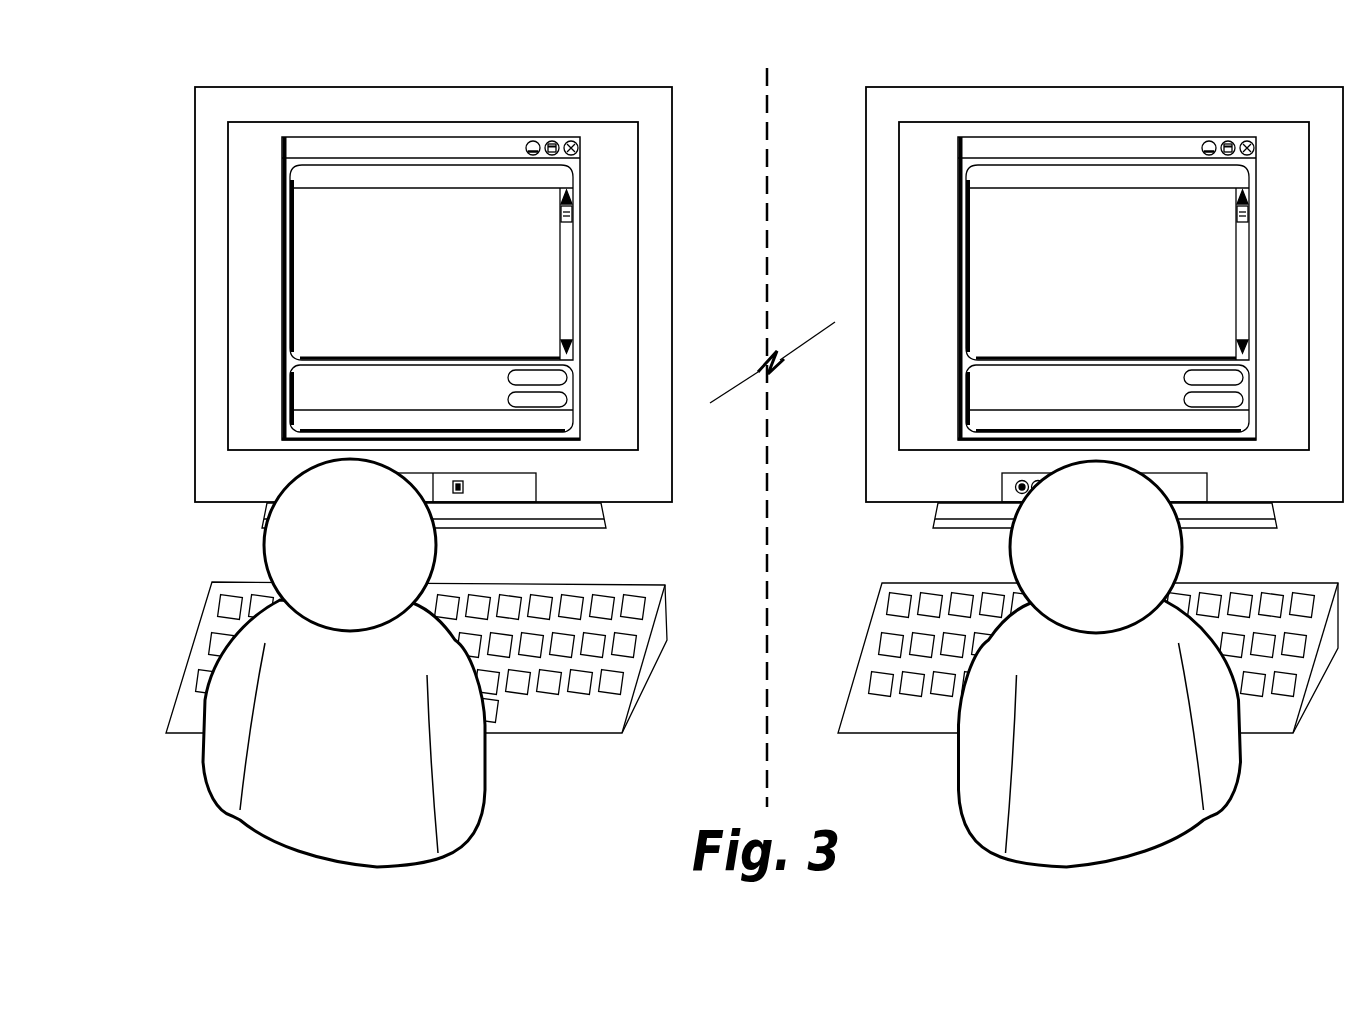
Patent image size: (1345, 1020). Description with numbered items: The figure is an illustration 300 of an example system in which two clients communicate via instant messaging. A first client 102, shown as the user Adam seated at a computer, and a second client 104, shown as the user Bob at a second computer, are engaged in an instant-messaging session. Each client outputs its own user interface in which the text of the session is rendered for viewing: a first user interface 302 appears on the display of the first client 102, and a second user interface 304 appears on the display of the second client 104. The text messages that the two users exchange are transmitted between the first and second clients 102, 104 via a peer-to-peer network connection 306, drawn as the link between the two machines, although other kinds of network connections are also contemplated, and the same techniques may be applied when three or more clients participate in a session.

The illustration 300 is at (320, 67).
The first user interface 302 is at (475, 137).
The second user interface 304 is at (1152, 137).
The peer-to-peer network connection 306 is at (743, 378).
The first client 102 is at (517, 766).
The second client 104 is at (947, 767).